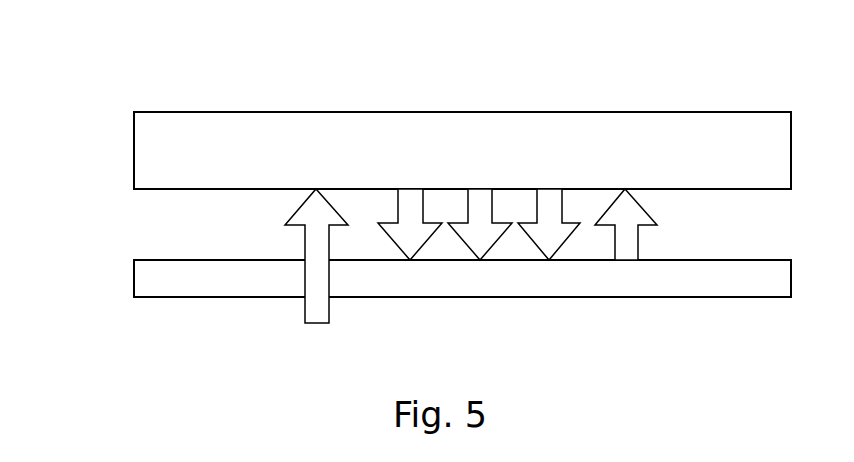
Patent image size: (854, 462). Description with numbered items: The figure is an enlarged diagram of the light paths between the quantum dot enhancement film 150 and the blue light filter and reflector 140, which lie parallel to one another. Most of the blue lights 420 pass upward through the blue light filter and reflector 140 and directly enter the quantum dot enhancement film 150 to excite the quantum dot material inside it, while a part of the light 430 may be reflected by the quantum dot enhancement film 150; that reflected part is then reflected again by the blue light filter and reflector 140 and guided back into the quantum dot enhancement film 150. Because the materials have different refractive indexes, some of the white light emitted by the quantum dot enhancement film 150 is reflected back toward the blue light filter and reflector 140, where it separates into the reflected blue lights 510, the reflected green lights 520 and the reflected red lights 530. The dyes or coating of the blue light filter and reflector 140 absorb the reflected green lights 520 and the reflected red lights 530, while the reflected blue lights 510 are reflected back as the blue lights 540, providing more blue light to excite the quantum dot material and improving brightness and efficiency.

The quantum dot enhancement film 150 is at (134, 146).
The blue light filter and reflector 140 is at (134, 272).
The blue lights 420 is at (305, 307).
The reflected blue lights 510 is at (410, 189).
The reflected green lights 520 is at (480, 189).
The reflected red lights 530 is at (549, 189).
The blue lights 540 is at (637, 189).
The part of the light 430 is at (576, 166).